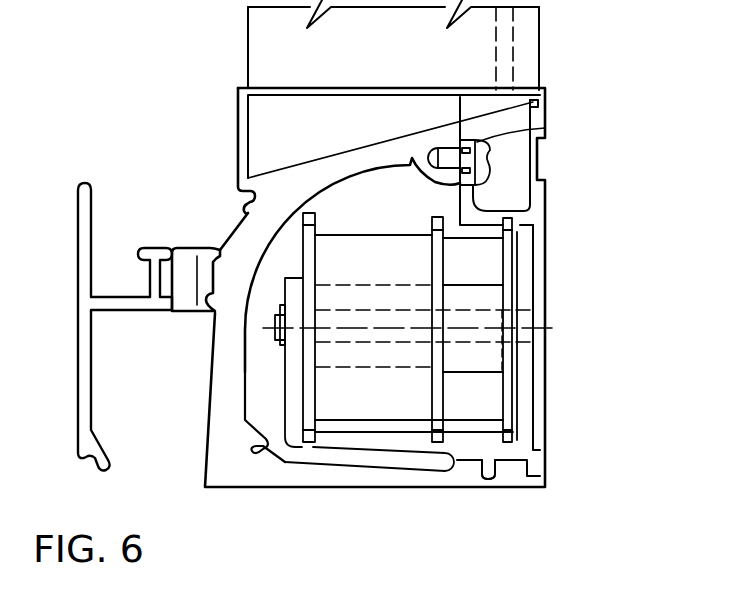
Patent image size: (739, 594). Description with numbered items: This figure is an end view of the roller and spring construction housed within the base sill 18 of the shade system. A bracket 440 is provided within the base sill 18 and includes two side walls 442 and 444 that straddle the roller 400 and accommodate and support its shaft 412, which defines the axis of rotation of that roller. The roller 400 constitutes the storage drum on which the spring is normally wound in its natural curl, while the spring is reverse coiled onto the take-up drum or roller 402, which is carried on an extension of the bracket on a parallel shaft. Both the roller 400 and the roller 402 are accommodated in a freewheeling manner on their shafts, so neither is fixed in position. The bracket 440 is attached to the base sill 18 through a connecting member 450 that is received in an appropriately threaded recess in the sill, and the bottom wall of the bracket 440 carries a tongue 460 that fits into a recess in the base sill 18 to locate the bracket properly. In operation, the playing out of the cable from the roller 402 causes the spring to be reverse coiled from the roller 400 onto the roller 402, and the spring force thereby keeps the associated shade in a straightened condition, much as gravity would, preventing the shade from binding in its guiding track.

The base sill 18 is at (178, 425).
The roller 400 is at (392, 250).
The roller 402 is at (492, 258).
The side wall 444 is at (523, 288).
The connecting member 450 is at (542, 124).
The shaft 412 is at (275, 328).
The side wall 442 is at (293, 373).
The bracket 440 is at (333, 442).
The tongue 460 is at (495, 476).